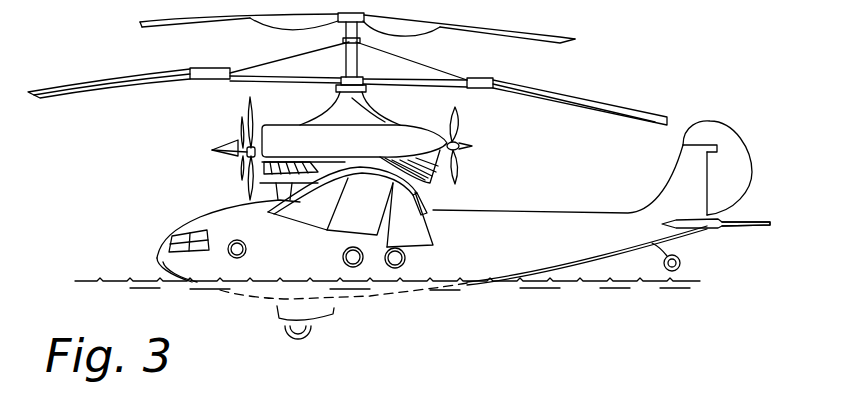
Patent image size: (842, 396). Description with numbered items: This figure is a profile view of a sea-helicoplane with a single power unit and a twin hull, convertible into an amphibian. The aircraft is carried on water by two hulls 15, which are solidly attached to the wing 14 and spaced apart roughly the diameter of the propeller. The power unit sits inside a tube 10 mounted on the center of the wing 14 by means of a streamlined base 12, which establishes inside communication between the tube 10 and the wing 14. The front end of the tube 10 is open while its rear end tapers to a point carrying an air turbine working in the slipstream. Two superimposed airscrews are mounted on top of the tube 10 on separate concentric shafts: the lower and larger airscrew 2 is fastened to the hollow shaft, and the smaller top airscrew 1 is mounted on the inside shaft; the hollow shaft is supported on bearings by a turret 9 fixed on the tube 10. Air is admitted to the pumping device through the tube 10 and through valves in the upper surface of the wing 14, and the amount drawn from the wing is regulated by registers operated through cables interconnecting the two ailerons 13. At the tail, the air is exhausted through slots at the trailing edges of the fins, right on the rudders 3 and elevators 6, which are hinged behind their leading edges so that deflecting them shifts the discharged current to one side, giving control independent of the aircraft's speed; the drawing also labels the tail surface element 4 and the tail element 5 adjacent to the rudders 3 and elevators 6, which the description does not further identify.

The top airscrew 1 is at (573, 41).
The lower airscrew 2 is at (565, 92).
The rudder 3 is at (719, 183).
The tail fin 4 is at (716, 168).
The elevator 5 is at (708, 229).
The elevator 6 is at (716, 215).
The turret 9 is at (350, 108).
The tube 10 is at (342, 148).
The streamlined base 12 is at (289, 181).
The aileron 13 is at (427, 210).
The wing 14 is at (350, 207).
The hull 15 is at (432, 242).